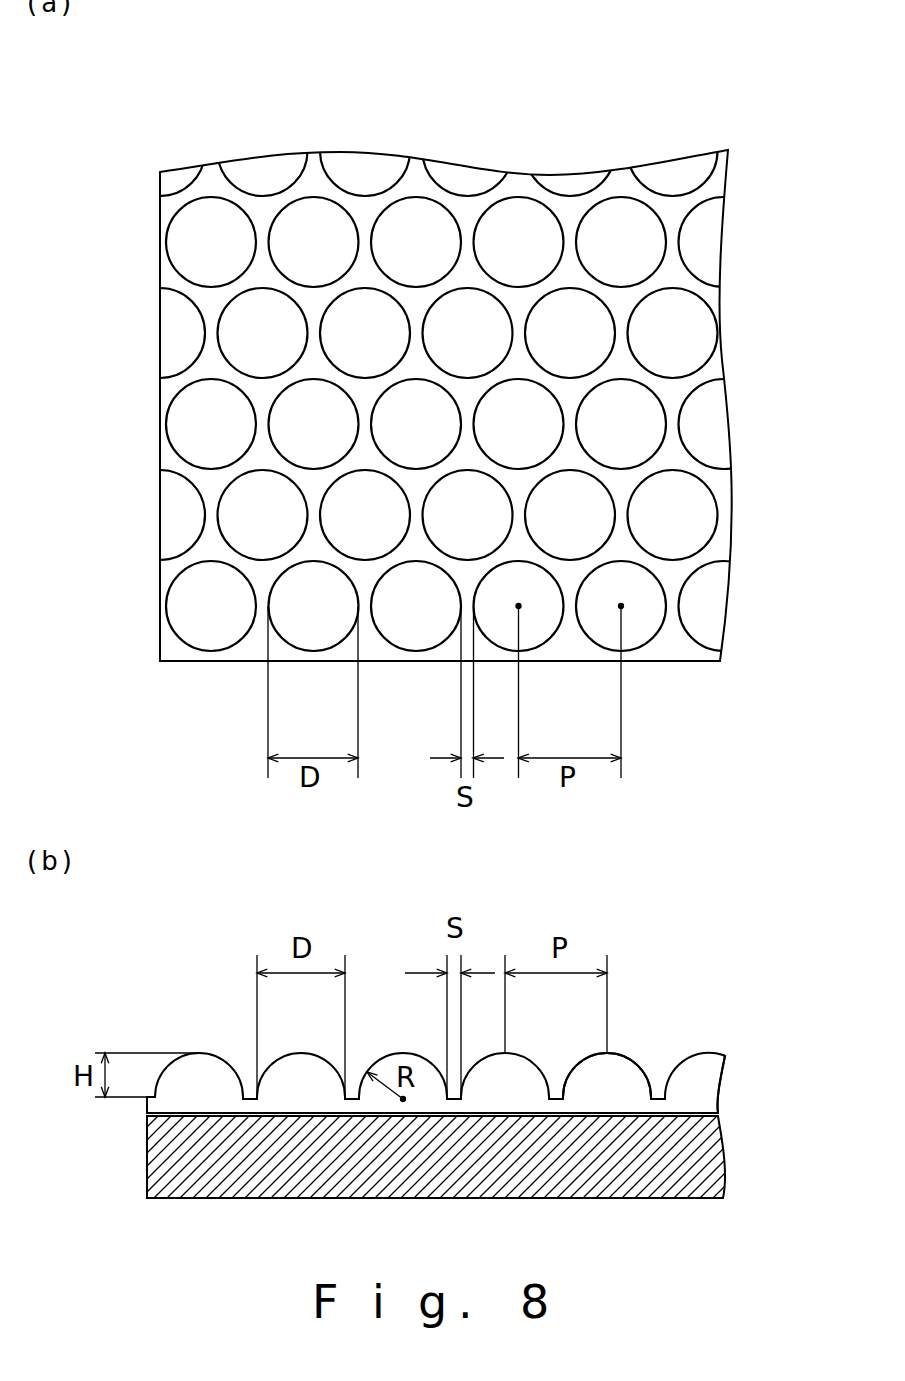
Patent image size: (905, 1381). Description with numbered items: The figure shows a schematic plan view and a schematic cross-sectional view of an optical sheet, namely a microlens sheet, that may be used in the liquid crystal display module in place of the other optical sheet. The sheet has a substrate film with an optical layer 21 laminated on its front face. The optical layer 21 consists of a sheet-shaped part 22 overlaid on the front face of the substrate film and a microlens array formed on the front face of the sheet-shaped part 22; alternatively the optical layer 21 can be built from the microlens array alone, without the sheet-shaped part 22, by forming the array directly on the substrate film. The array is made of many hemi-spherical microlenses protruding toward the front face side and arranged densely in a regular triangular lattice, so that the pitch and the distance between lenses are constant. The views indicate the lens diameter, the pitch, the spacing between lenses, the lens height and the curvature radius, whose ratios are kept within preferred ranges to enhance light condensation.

The optical layer 21 is at (718, 1090).
The sheet-shaped part 22 is at (147, 1105).